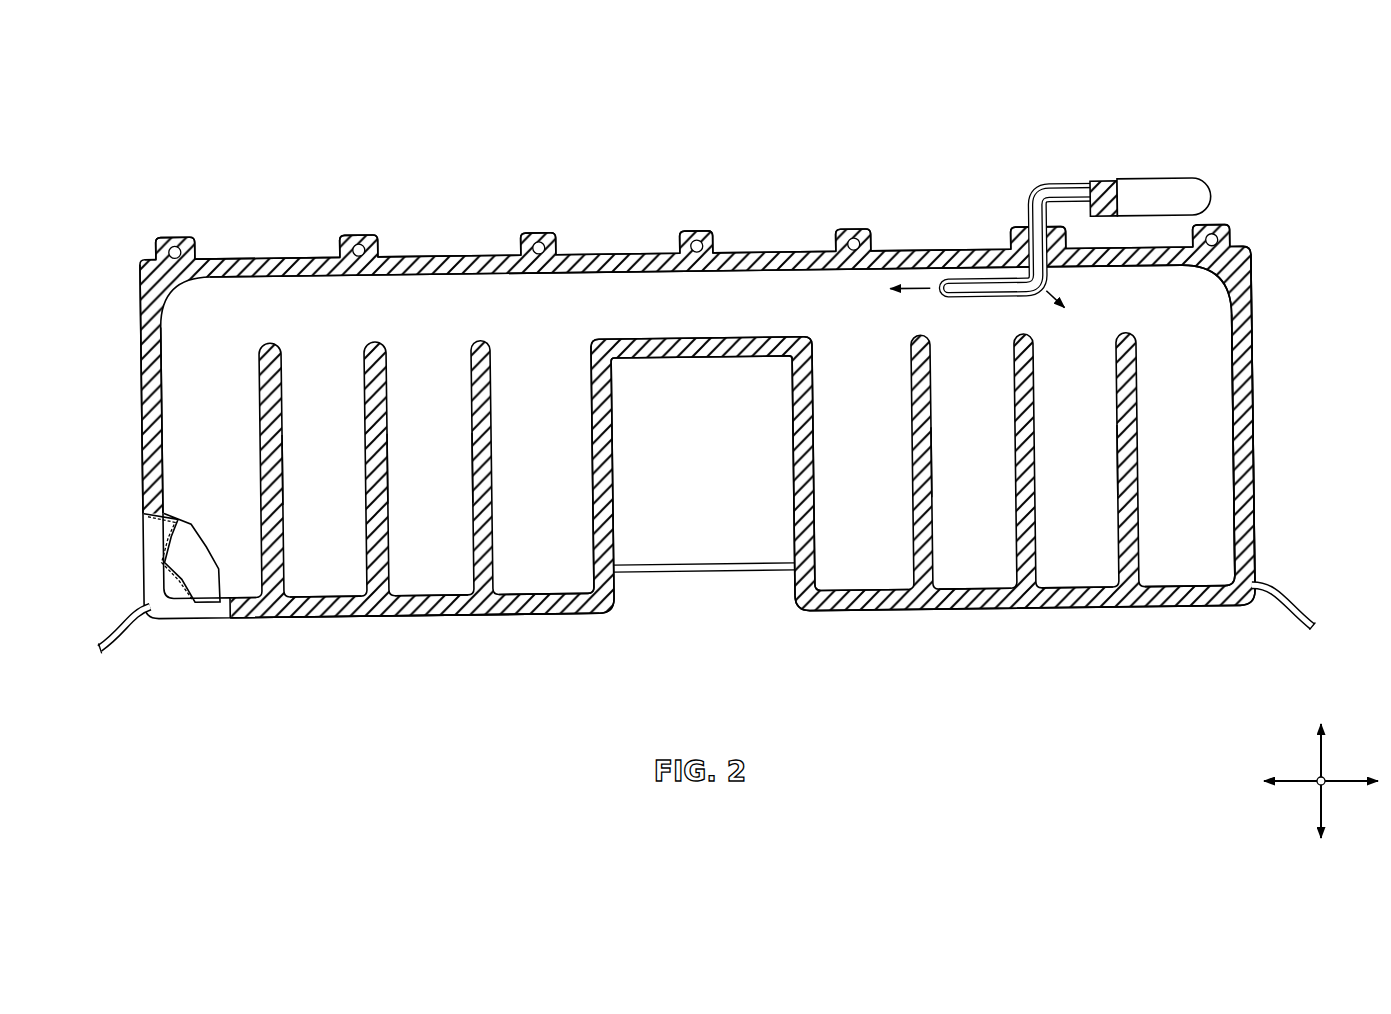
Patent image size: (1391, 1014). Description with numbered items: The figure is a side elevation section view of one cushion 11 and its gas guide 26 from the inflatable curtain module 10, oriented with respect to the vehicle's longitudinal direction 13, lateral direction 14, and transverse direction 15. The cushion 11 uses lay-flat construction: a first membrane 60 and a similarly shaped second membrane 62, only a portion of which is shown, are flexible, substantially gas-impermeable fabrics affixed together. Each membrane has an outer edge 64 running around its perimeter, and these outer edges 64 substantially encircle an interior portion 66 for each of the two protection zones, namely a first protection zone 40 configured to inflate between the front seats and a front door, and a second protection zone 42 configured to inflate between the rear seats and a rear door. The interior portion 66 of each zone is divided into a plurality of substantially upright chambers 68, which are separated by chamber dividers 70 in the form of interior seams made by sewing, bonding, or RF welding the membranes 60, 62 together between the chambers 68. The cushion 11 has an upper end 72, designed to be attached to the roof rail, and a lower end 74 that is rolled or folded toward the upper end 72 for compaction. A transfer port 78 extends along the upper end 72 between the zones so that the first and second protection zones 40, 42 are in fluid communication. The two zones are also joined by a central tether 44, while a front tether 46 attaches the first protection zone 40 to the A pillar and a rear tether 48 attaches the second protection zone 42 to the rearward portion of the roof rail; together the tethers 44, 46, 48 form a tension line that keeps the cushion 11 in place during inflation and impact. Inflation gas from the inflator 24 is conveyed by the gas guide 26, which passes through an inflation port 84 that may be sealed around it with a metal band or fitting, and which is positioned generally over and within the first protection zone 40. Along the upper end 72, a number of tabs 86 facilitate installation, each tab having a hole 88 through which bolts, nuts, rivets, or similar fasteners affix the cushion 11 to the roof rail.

The inflatable curtain module 10 is at (1017, 148).
The cushion 11 is at (785, 218).
The longitudinal direction 13 is at (1350, 785).
The lateral direction 14 is at (1315, 787).
The transverse direction 15 is at (1322, 758).
The inflator 24 is at (1158, 187).
The gas guide 26 is at (1027, 196).
The first protection zone 40 is at (1015, 643).
The second protection zone 42 is at (372, 636).
The central tether 44 is at (693, 566).
The front tether 46 is at (1285, 598).
The rear tether 48 is at (125, 633).
The first membrane 60 is at (444, 246).
The second membrane 62 is at (190, 560).
The outer edge 64 is at (815, 250).
The interior portion 66 is at (754, 551).
The chamber 68 is at (702, 399).
The chamber divider 70 is at (280, 492).
The upper end 72 is at (1275, 284).
The lower end 74 is at (1275, 502).
The transfer port 78 is at (682, 312).
The inflation port 84 is at (1013, 245).
The tab 86 is at (170, 237).
The hole 88 is at (197, 233).